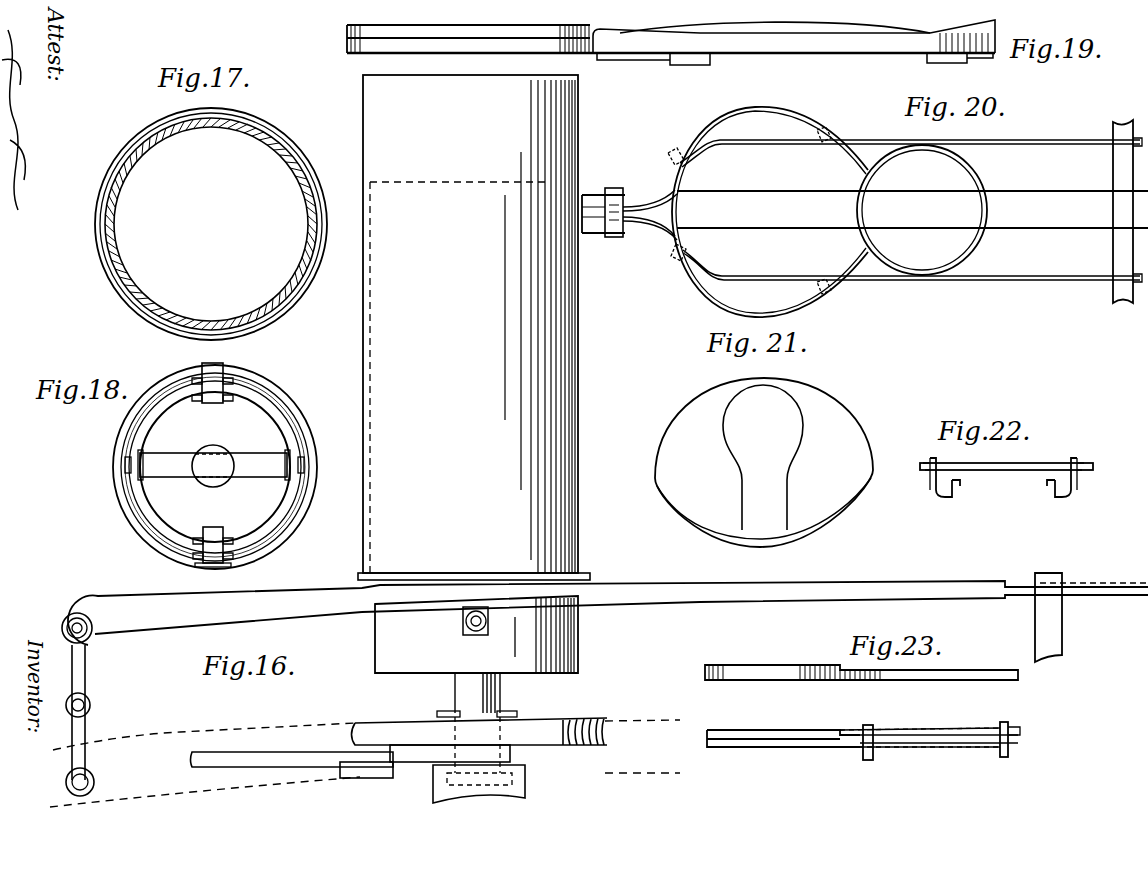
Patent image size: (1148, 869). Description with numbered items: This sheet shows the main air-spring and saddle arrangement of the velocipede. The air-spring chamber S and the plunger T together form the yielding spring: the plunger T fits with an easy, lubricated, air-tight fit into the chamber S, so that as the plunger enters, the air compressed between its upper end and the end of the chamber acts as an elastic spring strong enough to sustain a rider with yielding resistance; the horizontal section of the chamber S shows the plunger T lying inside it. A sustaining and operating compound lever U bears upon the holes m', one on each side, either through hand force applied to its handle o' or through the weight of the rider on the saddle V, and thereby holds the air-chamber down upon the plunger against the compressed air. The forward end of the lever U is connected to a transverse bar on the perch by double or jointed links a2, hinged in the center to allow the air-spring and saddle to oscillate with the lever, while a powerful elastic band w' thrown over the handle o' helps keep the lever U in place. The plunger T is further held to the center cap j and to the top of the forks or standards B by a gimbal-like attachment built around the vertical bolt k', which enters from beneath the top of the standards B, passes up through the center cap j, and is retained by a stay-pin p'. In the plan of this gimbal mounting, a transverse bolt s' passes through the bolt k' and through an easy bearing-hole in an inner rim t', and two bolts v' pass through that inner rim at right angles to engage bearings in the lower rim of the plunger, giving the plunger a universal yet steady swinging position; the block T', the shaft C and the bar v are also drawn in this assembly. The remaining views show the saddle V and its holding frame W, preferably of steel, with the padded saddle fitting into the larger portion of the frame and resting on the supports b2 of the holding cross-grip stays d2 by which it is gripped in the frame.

In FIG. 17, the air-spring chamber S is at (112, 286).
In FIG. 18, the air-spring chamber S is at (297, 525).
In FIG. 16, the air-spring chamber S is at (474, 327).
In FIG. 17, the plunger T is at (211, 224).
In FIG. 16, the compound lever U is at (605, 601).
In FIG. 20, the compound lever U is at (911, 209).
In FIG. 19, the saddle V is at (794, 32).
In FIG. 21, the saddle V is at (764, 462).
In FIG. 23, the saddle V is at (906, 731).
In FIG. 19, the saddle frame W is at (484, 33).
In FIG. 20, the saddle frame W is at (860, 268).
In FIG. 22, the saddle frame W is at (1006, 455).
In FIG. 23, the saddle frame W is at (763, 668).
In FIG. 16, the shaft C is at (178, 742).
In FIG. 20, the shaft C is at (865, 212).
In FIG. 18, the block T' is at (235, 467).
In FIG. 16, the block T' is at (476, 634).
In FIG. 18, the inner rim t' is at (225, 467).
In FIG. 18, the transverse bolt s' is at (214, 456).
In FIG. 18, the vertical bolt k' is at (206, 481).
In FIG. 16, the vertical bolt k' is at (502, 693).
In FIG. 18, the bolts v' is at (198, 373).
In FIG. 18, the elastic band w' is at (213, 547).
In FIG. 16, the elastic band w' is at (1066, 617).
In FIG. 20, the elastic band w' is at (616, 224).
In FIG. 16, the holes m' is at (453, 622).
In FIG. 16, the stay-pin p' is at (469, 700).
In FIG. 16, the center cap j is at (392, 730).
In FIG. 16, the forks or standards B is at (433, 790).
In FIG. 16, the bar v is at (351, 753).
In FIG. 16, the jointed links a2 is at (82, 745).
In FIG. 16, the handle o' is at (1094, 573).
In FIG. 22, the cross-grip stays d2 is at (925, 467).
In FIG. 23, the cross-grip stays d2 is at (872, 752).
In FIG. 22, the supports b2 is at (960, 483).